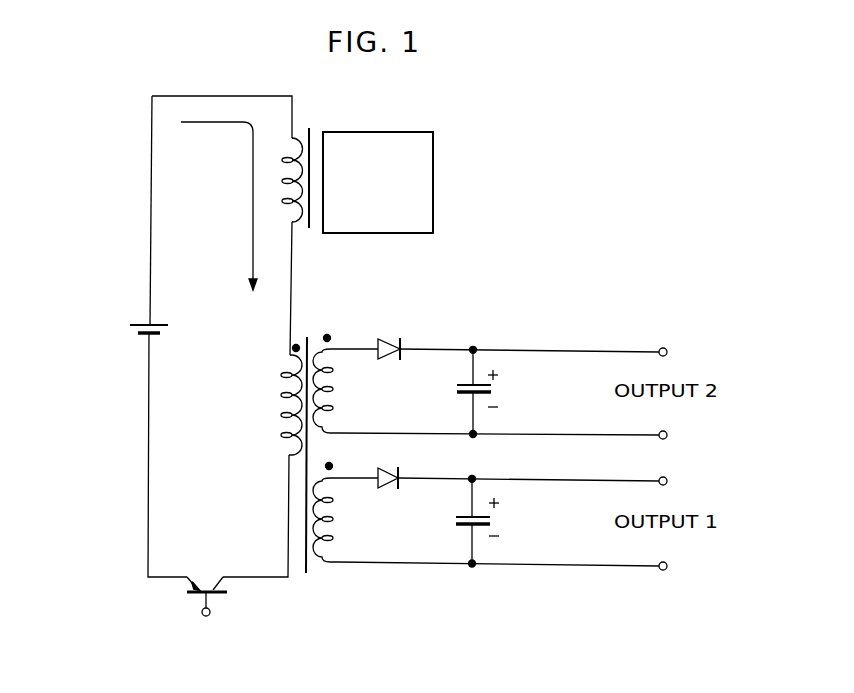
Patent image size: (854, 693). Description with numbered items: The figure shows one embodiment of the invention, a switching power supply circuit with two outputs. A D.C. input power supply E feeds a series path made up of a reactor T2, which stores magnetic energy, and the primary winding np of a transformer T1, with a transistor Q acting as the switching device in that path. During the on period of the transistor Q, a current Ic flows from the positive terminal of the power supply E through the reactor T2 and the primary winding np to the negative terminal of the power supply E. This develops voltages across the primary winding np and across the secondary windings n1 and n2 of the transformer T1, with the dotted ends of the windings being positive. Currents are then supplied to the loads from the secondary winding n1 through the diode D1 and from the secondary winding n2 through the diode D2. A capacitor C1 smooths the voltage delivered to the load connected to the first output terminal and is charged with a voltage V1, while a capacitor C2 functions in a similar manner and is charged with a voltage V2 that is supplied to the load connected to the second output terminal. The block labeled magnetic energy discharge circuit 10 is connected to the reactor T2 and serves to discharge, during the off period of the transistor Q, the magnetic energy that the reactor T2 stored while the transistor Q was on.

The magnetic energy discharge means 10 is at (434, 170).
The reactor T2 is at (312, 130).
The transformer T1 is at (305, 576).
The primary winding np is at (280, 396).
The secondary winding n2 is at (333, 390).
The secondary winding n1 is at (333, 522).
The diode D2 is at (389, 342).
The diode D1 is at (392, 469).
The capacitor C2 is at (456, 391).
The capacitor C1 is at (456, 521).
The voltage V2 is at (514, 388).
The voltage V1 is at (515, 517).
The transistor Q is at (208, 576).
The D.C. input power supply E is at (137, 333).
The current Ic is at (219, 206).